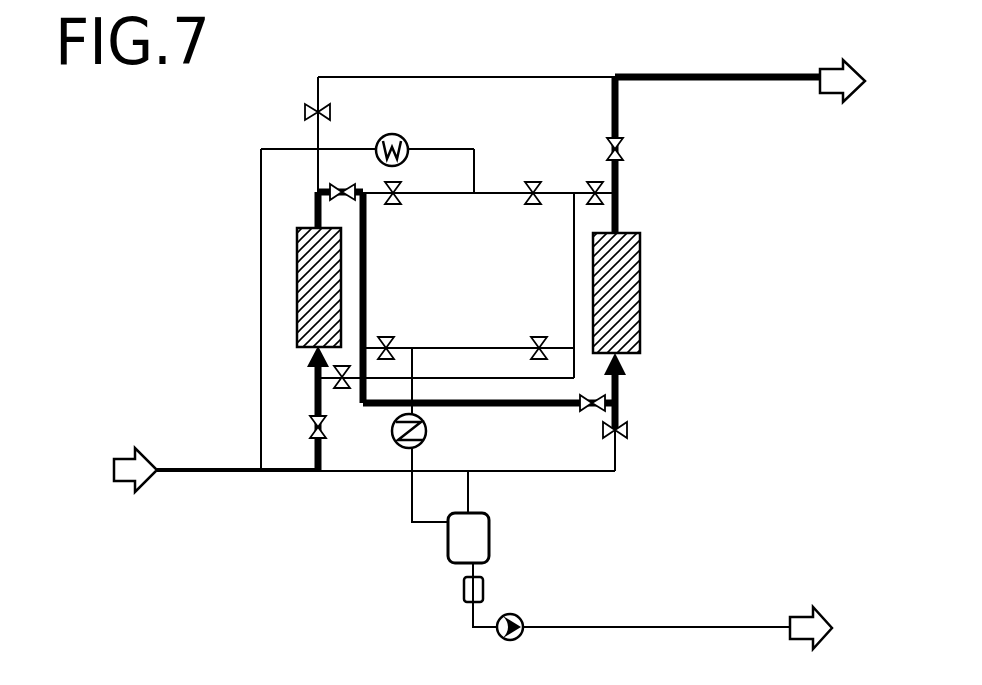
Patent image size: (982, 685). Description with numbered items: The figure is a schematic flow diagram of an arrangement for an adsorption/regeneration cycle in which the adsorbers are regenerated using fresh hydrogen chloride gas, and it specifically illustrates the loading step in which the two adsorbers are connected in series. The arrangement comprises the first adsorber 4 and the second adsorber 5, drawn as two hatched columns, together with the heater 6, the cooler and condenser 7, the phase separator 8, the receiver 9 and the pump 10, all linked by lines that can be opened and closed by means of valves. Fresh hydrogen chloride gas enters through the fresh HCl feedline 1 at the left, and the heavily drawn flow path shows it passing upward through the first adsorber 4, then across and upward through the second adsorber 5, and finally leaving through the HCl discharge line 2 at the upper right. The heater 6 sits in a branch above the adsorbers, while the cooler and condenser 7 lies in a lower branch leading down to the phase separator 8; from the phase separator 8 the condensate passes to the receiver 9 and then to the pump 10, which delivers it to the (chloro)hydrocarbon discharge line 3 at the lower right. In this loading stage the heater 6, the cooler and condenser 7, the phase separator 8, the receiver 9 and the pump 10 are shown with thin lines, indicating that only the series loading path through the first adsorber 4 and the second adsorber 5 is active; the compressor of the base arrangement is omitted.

The fresh HCl feedline 1 is at (122, 470).
The HCl discharge line 2 is at (852, 81).
The (chloro)hydrocarbon discharge line 3 is at (821, 628).
The first adsorber 4 is at (311, 287).
The second adsorber 5 is at (630, 293).
The heater 6 is at (392, 130).
The cooler and condenser 7 is at (422, 432).
The phase separator 8 is at (480, 538).
The receiver 9 is at (484, 590).
The pump 10 is at (527, 617).